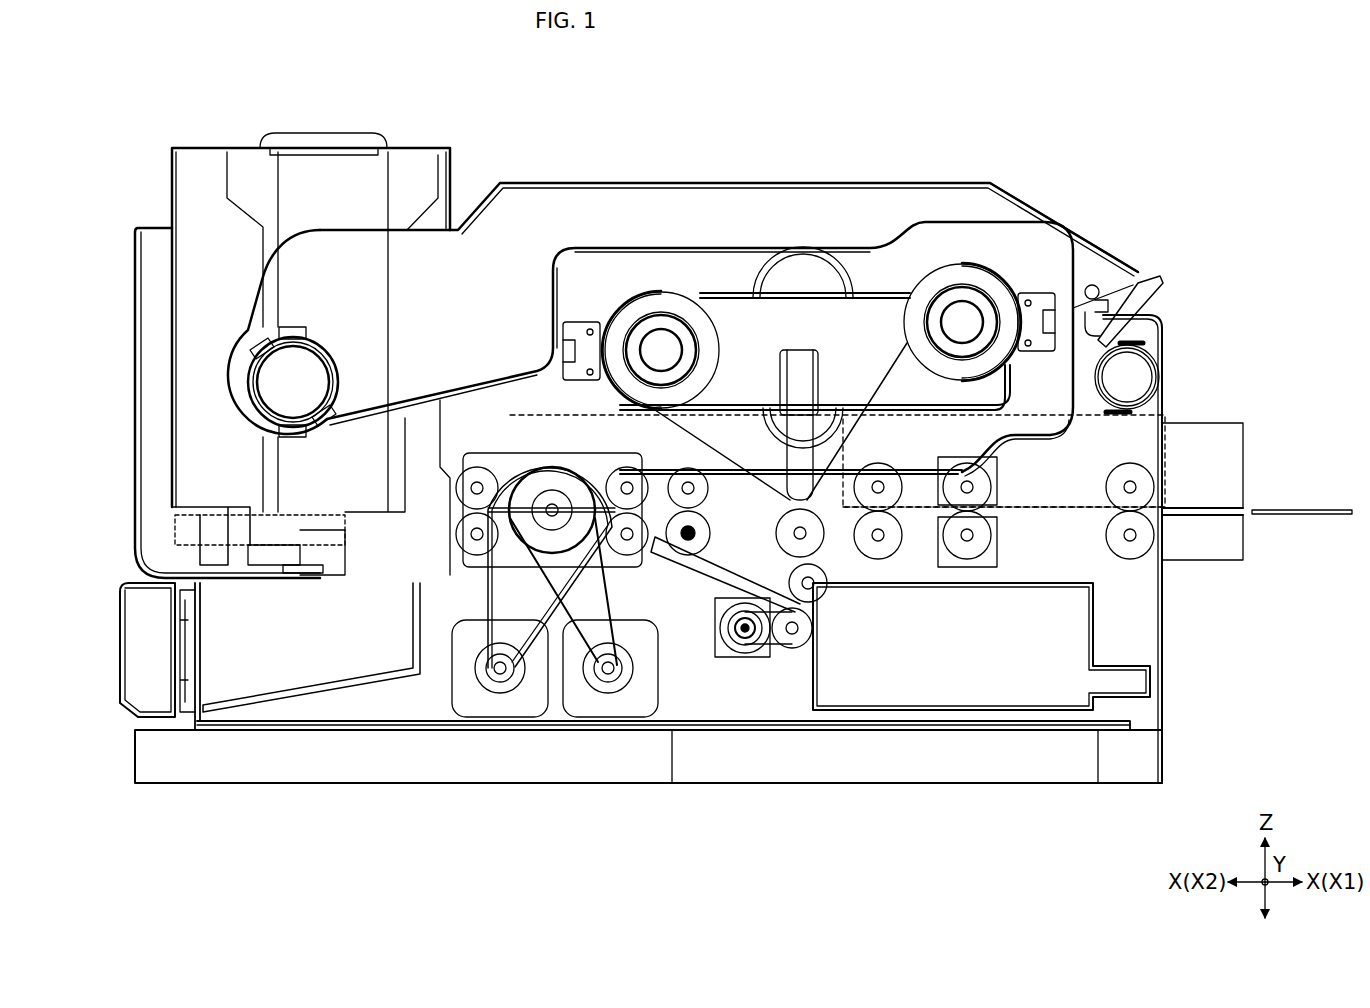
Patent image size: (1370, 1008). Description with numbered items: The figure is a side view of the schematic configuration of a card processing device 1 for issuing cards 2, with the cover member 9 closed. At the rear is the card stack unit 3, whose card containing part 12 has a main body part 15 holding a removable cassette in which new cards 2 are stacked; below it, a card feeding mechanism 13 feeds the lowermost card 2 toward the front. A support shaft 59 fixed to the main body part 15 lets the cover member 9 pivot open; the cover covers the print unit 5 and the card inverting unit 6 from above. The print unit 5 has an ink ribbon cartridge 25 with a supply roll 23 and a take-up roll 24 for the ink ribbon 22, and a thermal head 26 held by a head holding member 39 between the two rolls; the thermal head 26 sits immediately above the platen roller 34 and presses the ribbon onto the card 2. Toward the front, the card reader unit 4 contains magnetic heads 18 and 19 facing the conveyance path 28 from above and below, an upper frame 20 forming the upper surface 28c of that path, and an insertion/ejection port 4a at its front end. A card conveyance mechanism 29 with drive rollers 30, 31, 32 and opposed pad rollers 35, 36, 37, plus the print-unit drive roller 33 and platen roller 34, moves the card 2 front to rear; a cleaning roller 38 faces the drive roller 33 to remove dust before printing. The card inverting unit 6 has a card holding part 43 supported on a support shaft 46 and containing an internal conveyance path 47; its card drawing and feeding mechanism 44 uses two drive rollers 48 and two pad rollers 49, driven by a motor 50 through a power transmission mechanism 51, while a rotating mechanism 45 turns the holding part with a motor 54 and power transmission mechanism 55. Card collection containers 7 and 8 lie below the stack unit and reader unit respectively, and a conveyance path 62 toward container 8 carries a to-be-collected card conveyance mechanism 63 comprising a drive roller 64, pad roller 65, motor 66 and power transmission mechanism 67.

The card processing device 1 is at (1096, 185).
The card 2 is at (1292, 510).
The card stack unit 3 is at (418, 148).
The card reader unit 4 is at (1188, 395).
The insertion/ejection port 4a is at (1246, 506).
The print unit 5 is at (862, 212).
The card inverting unit 6 is at (530, 396).
The card collection container 7 is at (330, 712).
The card collection container 8 is at (935, 730).
The cover member 9 is at (797, 180).
The card containing part 12 is at (252, 148).
The card feeding mechanism 13 is at (250, 515).
The main body part 15 is at (135, 288).
The magnetic head 18 is at (998, 470).
The magnetic head 19 is at (998, 540).
The upper frame 20 is at (1036, 415).
The ink ribbon 22 is at (875, 388).
The supply roll 23 is at (962, 264).
The take-up roll 24 is at (665, 292).
The ink ribbon cartridge 25 is at (722, 248).
The thermal head 26 is at (787, 456).
The conveyance path 28 is at (918, 490).
The upper surface 28c is at (1078, 510).
The card conveyance mechanism 29 is at (1178, 577).
The drive roller 30 is at (1118, 470).
The drive roller 31 is at (998, 490).
The drive roller 32 is at (878, 462).
The drive roller 33 is at (713, 537).
The platen roller 34 is at (777, 534).
The pad roller 35 is at (1130, 560).
The pad roller 36 is at (968, 567).
The pad roller 37 is at (880, 560).
The cleaning roller 38 is at (710, 488).
The head holding member 39 is at (800, 350).
The card holding part 43 is at (490, 452).
The card drawing and feeding mechanism 44 is at (676, 722).
The rotating mechanism 45 is at (441, 735).
The support shaft 46 is at (550, 527).
The conveyance path 47 is at (552, 468).
The drive roller 48 is at (476, 465).
The pad roller 49 is at (470, 558).
The motor 50 is at (612, 718).
The power transmission mechanism 51 is at (645, 655).
The motor 54 is at (500, 718).
The power transmission mechanism 55 is at (470, 660).
The support shaft 59 is at (330, 352).
The conveyance path 62 is at (705, 572).
The to-be-collected card conveyance mechanism 63 is at (836, 650).
The drive roller 64 is at (790, 650).
The pad roller 65 is at (823, 596).
The motor 66 is at (740, 657).
The power transmission mechanism 67 is at (765, 660).